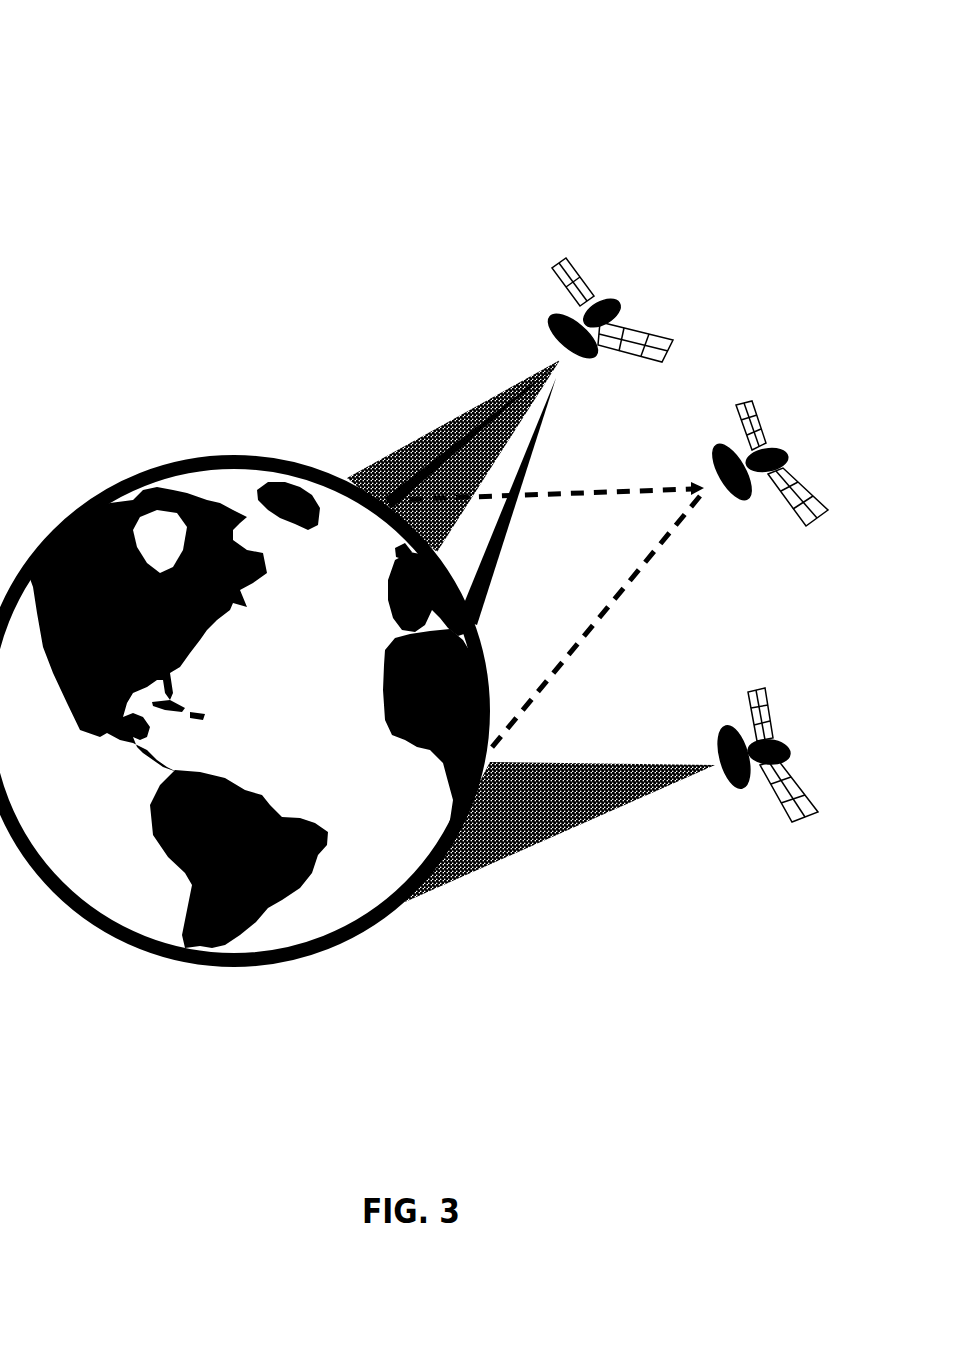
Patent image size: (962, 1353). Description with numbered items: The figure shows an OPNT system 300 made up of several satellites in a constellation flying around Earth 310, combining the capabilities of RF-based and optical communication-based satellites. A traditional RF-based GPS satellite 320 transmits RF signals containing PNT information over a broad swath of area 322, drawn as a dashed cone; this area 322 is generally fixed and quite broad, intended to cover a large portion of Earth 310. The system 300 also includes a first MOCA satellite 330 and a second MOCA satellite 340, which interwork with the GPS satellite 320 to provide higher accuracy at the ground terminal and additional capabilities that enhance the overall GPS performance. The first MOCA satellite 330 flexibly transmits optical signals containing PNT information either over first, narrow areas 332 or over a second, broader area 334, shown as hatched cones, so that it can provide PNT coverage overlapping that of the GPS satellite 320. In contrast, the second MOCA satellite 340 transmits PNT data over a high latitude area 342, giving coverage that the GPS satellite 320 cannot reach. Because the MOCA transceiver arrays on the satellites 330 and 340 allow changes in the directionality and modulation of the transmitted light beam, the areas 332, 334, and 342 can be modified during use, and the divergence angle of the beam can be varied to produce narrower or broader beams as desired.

The OPNT system 300 is at (222, 220).
The Earth 310 is at (142, 470).
The RF-based GPS satellite 320 is at (785, 445).
The area 322 is at (650, 555).
The first MOCA satellite 330 is at (610, 300).
The first, narrow areas 332 is at (530, 452).
The second, broader area 334 is at (458, 413).
The second MOCA satellite 340 is at (778, 740).
The high latitude area 342 is at (557, 833).